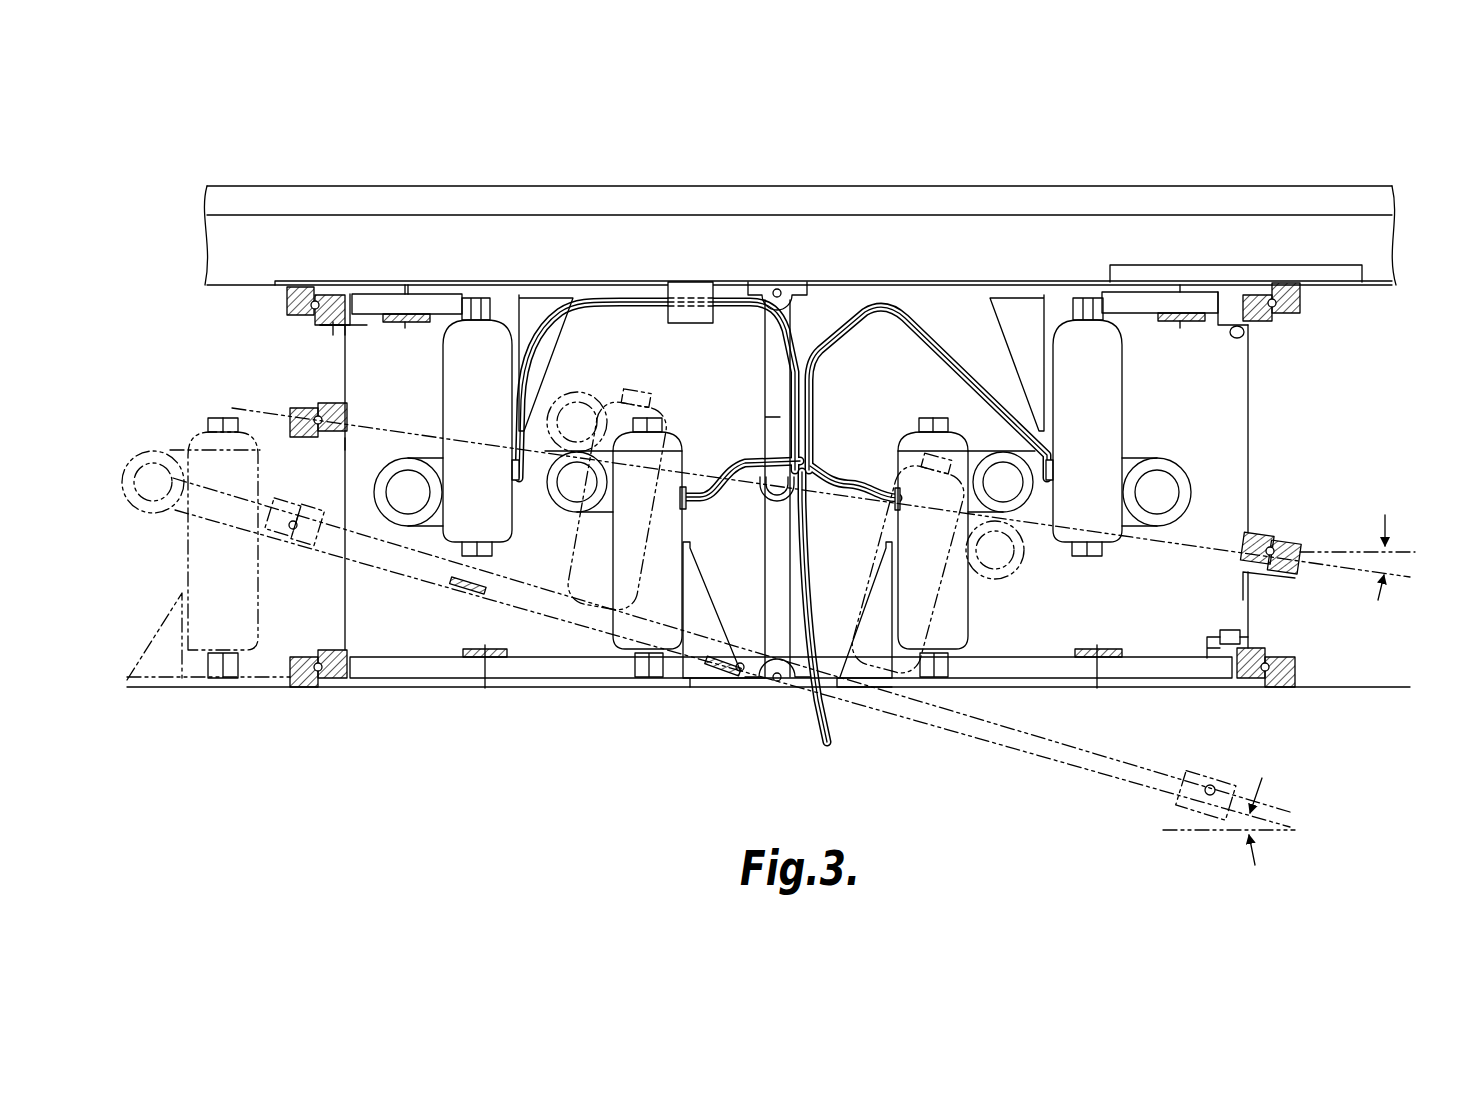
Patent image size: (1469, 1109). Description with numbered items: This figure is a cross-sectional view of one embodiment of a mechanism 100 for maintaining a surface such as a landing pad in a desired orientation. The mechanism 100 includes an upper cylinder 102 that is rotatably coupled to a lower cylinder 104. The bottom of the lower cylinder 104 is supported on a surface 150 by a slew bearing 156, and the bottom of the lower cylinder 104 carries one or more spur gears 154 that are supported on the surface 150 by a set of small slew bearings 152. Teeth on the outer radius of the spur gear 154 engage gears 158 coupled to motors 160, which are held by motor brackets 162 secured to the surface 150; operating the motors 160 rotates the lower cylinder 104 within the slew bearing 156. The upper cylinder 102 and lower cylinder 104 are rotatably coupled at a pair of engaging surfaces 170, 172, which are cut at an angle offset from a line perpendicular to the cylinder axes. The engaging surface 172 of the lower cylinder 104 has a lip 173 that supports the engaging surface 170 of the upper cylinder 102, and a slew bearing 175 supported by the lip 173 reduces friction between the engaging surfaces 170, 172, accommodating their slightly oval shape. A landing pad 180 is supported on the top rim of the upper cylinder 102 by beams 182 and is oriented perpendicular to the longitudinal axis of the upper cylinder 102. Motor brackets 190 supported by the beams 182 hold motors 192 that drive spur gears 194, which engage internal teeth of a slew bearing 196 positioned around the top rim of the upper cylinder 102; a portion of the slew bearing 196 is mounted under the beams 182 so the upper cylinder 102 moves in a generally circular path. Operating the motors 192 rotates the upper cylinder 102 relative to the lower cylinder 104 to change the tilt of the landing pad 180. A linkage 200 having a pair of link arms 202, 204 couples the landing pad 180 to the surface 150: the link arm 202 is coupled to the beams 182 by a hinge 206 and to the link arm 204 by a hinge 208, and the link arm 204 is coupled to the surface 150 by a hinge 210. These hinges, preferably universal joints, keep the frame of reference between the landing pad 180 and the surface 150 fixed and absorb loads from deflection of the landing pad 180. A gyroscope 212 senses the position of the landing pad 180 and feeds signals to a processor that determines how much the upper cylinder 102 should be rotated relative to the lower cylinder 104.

The mechanism 100 is at (1357, 443).
The upper cylinder 102 is at (1250, 458).
The lower cylinder 104 is at (1255, 580).
The surface 150 is at (1403, 753).
The small slew bearings 152 is at (505, 684).
The spur gears 154 is at (420, 668).
The slew bearing 156 is at (320, 694).
The gears 158 is at (707, 600).
The motors 160 is at (610, 548).
The motor brackets 162 is at (878, 628).
The engaging surface 170 is at (1192, 540).
The engaging surface 172 is at (1192, 548).
The lip 173 is at (320, 448).
The slew bearing 175 is at (316, 402).
The landing pad 180 is at (1335, 190).
The beams 182 is at (1395, 235).
The motor brackets 190 is at (526, 328).
The motors 192 is at (490, 380).
The spur gears 194 is at (450, 305).
The slew bearing 196 is at (340, 322).
The linkage 200 is at (750, 385).
The link arm 202 is at (778, 423).
The link arm 204 is at (785, 580).
The hinge 206 is at (796, 282).
The hinge 208 is at (790, 482).
The hinge 210 is at (827, 647).
The gyroscope 212 is at (706, 278).